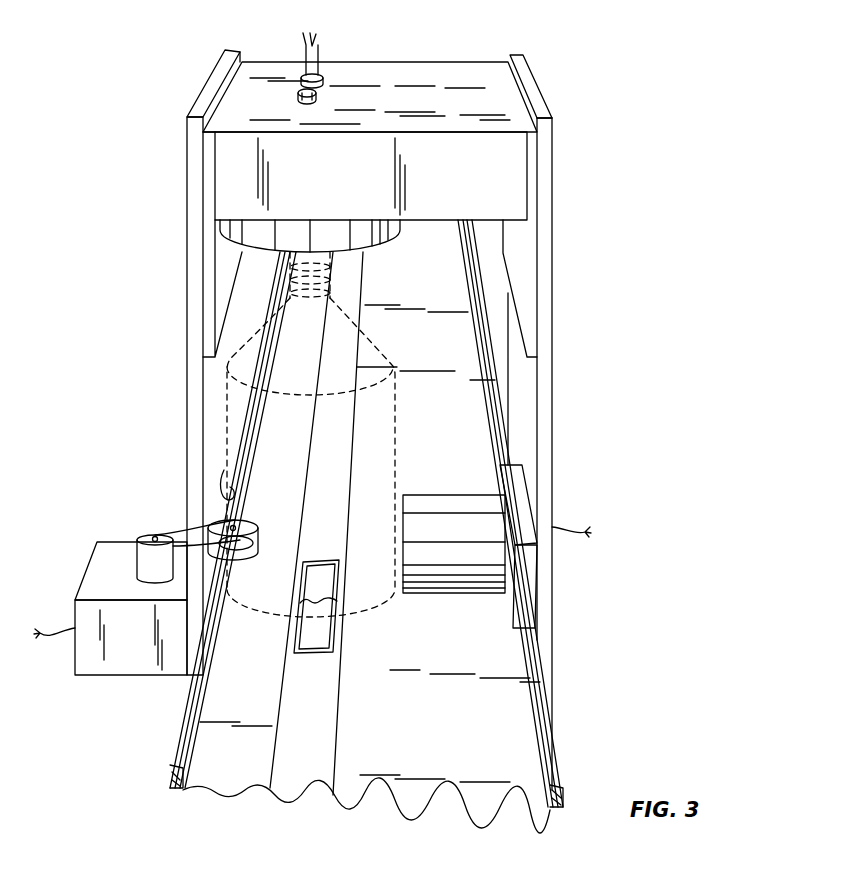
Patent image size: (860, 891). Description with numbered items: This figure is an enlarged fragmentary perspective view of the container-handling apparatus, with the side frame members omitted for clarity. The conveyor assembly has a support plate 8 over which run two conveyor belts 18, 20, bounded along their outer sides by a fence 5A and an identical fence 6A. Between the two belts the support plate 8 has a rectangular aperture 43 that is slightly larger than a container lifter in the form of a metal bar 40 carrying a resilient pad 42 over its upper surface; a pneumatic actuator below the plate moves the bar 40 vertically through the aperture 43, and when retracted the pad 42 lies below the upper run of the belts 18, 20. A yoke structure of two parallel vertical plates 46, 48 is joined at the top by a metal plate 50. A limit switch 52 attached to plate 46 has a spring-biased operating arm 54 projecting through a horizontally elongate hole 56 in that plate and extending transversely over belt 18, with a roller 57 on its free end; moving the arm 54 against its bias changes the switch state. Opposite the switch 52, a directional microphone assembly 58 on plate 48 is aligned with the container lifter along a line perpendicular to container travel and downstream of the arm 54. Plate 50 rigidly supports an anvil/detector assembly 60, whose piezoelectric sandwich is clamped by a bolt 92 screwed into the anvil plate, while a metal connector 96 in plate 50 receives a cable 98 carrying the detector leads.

The support plate 8 is at (305, 775).
The conveyor belt 18 is at (227, 773).
The conveyor belt 20 is at (437, 760).
The metal bar 40 is at (313, 653).
The resilient pad 42 is at (317, 580).
The rectangular aperture 43 is at (307, 630).
The vertical plate 46 is at (187, 328).
The vertical plate 48 is at (552, 387).
The metal plate 50 is at (507, 168).
The limit switch 52 is at (100, 566).
The operating arm 54 is at (177, 533).
The horizontally elongate hole 56 is at (223, 481).
The roller 57 is at (258, 540).
The microphone assembly 58 is at (460, 573).
The anvil/detector assembly 60 is at (255, 238).
The bolt 92 is at (298, 93).
The metal connector 96 is at (323, 78).
The cable 98 is at (318, 47).
The fence 5A is at (170, 770).
The fence 6A is at (563, 790).